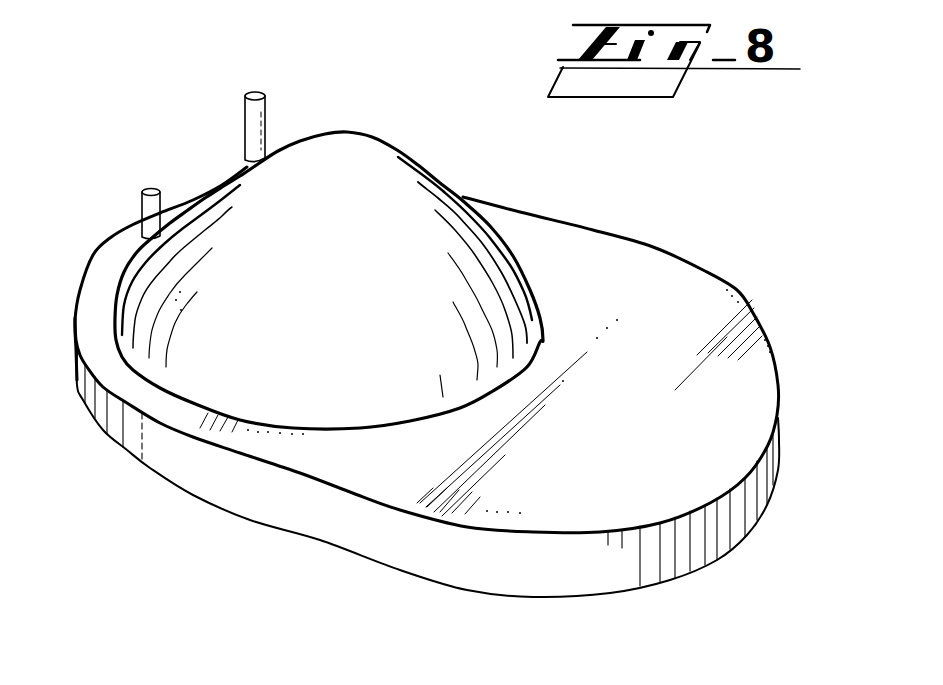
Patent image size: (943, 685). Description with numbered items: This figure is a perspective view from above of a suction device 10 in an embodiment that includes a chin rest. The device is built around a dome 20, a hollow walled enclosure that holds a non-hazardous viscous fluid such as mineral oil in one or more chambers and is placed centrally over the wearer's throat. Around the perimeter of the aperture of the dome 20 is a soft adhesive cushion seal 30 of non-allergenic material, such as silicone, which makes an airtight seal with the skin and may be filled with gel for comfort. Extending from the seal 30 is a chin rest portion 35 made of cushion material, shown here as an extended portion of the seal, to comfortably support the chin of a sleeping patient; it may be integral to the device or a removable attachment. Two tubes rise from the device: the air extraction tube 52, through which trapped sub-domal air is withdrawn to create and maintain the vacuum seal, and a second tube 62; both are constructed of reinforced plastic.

The suction device 10 is at (497, 77).
The dome 20 is at (382, 187).
The cushion seal 30 is at (220, 477).
The chin rest portion 35 is at (670, 440).
The air extraction tube 52 is at (148, 191).
The tube 62 is at (254, 93).